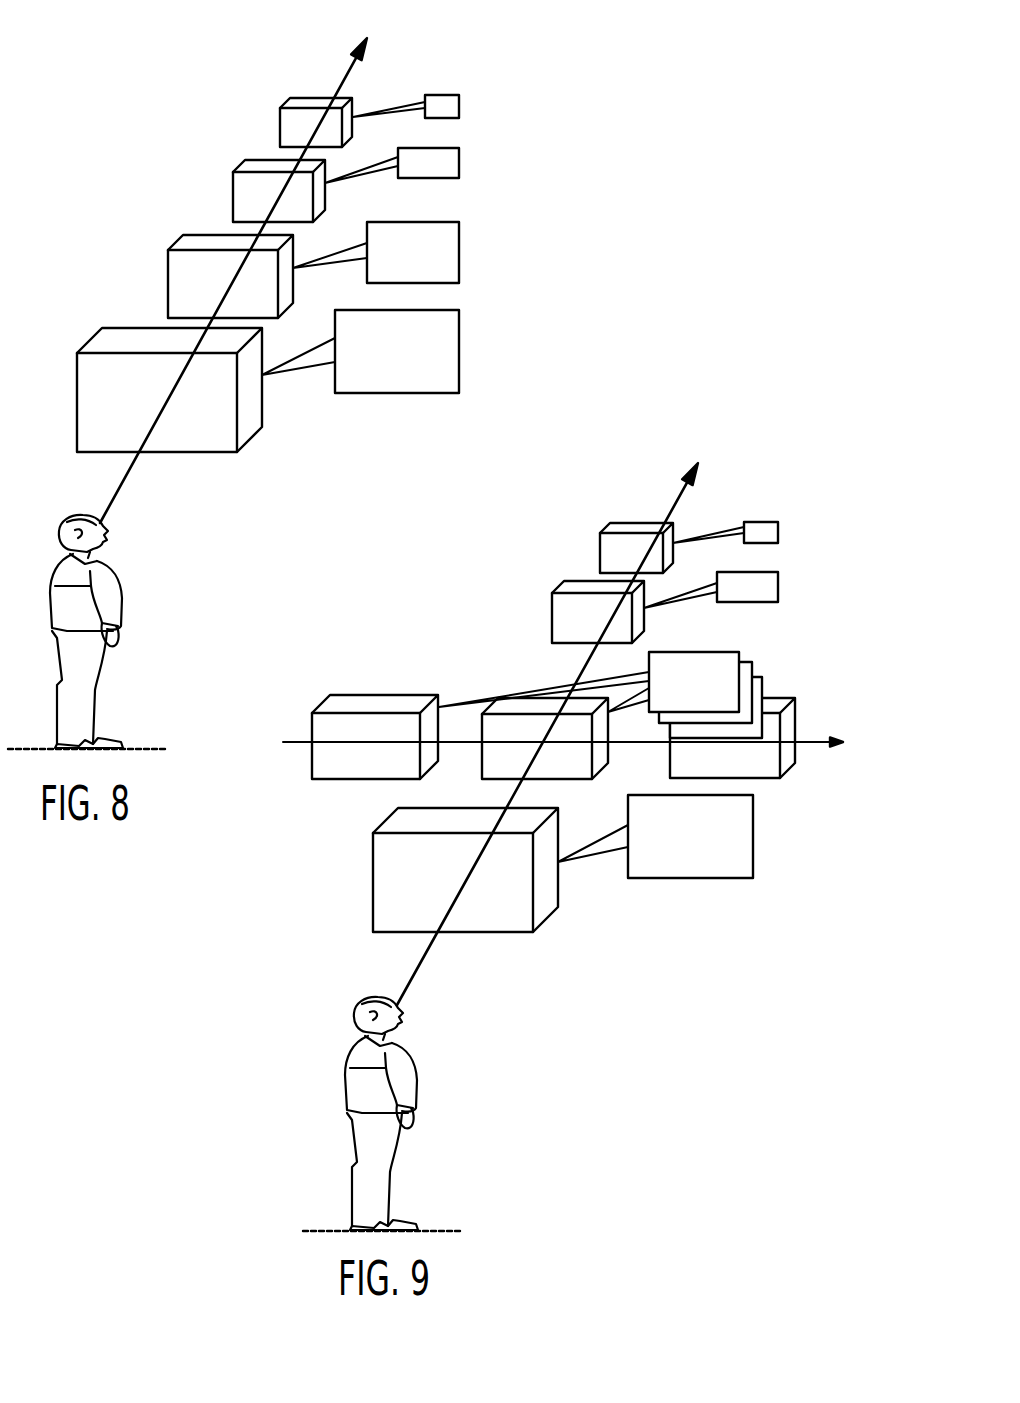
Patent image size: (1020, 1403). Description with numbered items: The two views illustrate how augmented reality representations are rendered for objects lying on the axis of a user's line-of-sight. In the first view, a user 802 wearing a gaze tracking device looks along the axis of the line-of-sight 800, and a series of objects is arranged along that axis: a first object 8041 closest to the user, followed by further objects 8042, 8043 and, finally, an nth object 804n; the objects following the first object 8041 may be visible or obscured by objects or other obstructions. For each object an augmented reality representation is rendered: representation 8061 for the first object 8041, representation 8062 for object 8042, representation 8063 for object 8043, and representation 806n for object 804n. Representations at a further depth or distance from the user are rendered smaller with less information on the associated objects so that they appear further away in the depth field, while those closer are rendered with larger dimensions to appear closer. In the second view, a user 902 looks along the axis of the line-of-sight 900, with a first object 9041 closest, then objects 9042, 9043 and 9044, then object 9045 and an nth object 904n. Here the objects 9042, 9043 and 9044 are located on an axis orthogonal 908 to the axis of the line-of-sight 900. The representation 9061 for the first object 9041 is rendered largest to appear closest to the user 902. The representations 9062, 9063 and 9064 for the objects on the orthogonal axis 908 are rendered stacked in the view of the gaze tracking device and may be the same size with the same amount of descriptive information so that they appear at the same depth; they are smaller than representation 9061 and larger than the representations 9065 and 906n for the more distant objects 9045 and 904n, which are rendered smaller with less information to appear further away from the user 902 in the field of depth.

In FIG. 8, the line-of-sight 800 is at (372, 36).
In FIG. 8, the user 802 is at (118, 588).
In FIG. 8, the object 804n is at (287, 97).
In FIG. 8, the object 8043 is at (241, 159).
In FIG. 8, the object 8042 is at (178, 236).
In FIG. 8, the first object 8041 is at (88, 337).
In FIG. 8, the augmented reality representation 806n is at (459, 106).
In FIG. 8, the augmented reality representation 8063 is at (459, 162).
In FIG. 8, the augmented reality representation 8062 is at (459, 252).
In FIG. 8, the augmented reality representation 8061 is at (459, 352).
In FIG. 9, the line-of-sight 900 is at (703, 458).
In FIG. 9, the user 902 is at (420, 1068).
In FIG. 9, the object 904n is at (606, 521).
In FIG. 9, the object 9045 is at (560, 582).
In FIG. 9, the object 9044 is at (797, 723).
In FIG. 9, the object 9043 is at (506, 712).
In FIG. 9, the object 9042 is at (383, 694).
In FIG. 9, the first object 9041 is at (372, 883).
In FIG. 9, the augmented reality representation 906n is at (778, 532).
In FIG. 9, the augmented reality representation 9065 is at (778, 587).
In FIG. 9, the augmented reality representation 9064 is at (767, 682).
In FIG. 9, the augmented reality representation 9063 is at (757, 662).
In FIG. 9, the augmented reality representation 9062 is at (665, 652).
In FIG. 9, the augmented reality representation 9061 is at (753, 836).
In FIG. 9, the axis orthogonal 908 is at (843, 744).